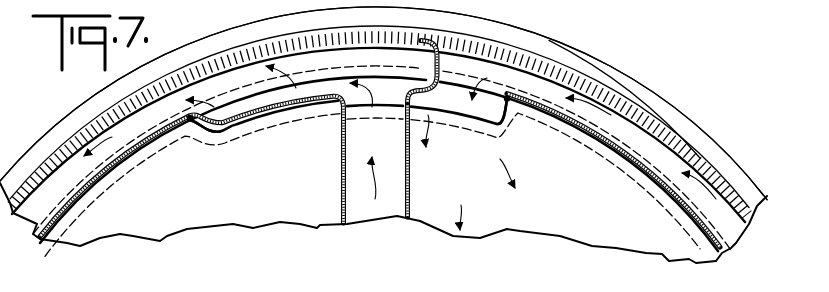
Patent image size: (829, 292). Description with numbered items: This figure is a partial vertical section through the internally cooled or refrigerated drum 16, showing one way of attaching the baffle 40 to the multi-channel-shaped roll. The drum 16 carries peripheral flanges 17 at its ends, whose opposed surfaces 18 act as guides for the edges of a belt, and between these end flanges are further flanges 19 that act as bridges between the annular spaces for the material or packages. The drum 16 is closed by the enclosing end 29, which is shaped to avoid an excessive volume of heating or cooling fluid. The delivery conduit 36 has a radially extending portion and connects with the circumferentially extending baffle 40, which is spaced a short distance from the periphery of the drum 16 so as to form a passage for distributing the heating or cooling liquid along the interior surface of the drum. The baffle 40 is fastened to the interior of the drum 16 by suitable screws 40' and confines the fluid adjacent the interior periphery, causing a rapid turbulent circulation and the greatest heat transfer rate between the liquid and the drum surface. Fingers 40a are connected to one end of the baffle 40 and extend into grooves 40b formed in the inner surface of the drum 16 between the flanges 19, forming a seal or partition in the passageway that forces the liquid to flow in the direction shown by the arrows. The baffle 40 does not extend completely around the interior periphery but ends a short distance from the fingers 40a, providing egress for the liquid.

The drum 16 is at (209, 35).
The peripheral flanges 17 is at (617, 68).
The opposed surfaces 18 is at (550, 42).
The flanges 19 is at (646, 110).
The enclosing end 29 is at (532, 218).
The delivery conduit 36 is at (340, 158).
The baffle 40 is at (380, 170).
The screws 40' is at (355, 133).
The fingers 40a is at (444, 62).
The grooves 40b is at (329, 26).